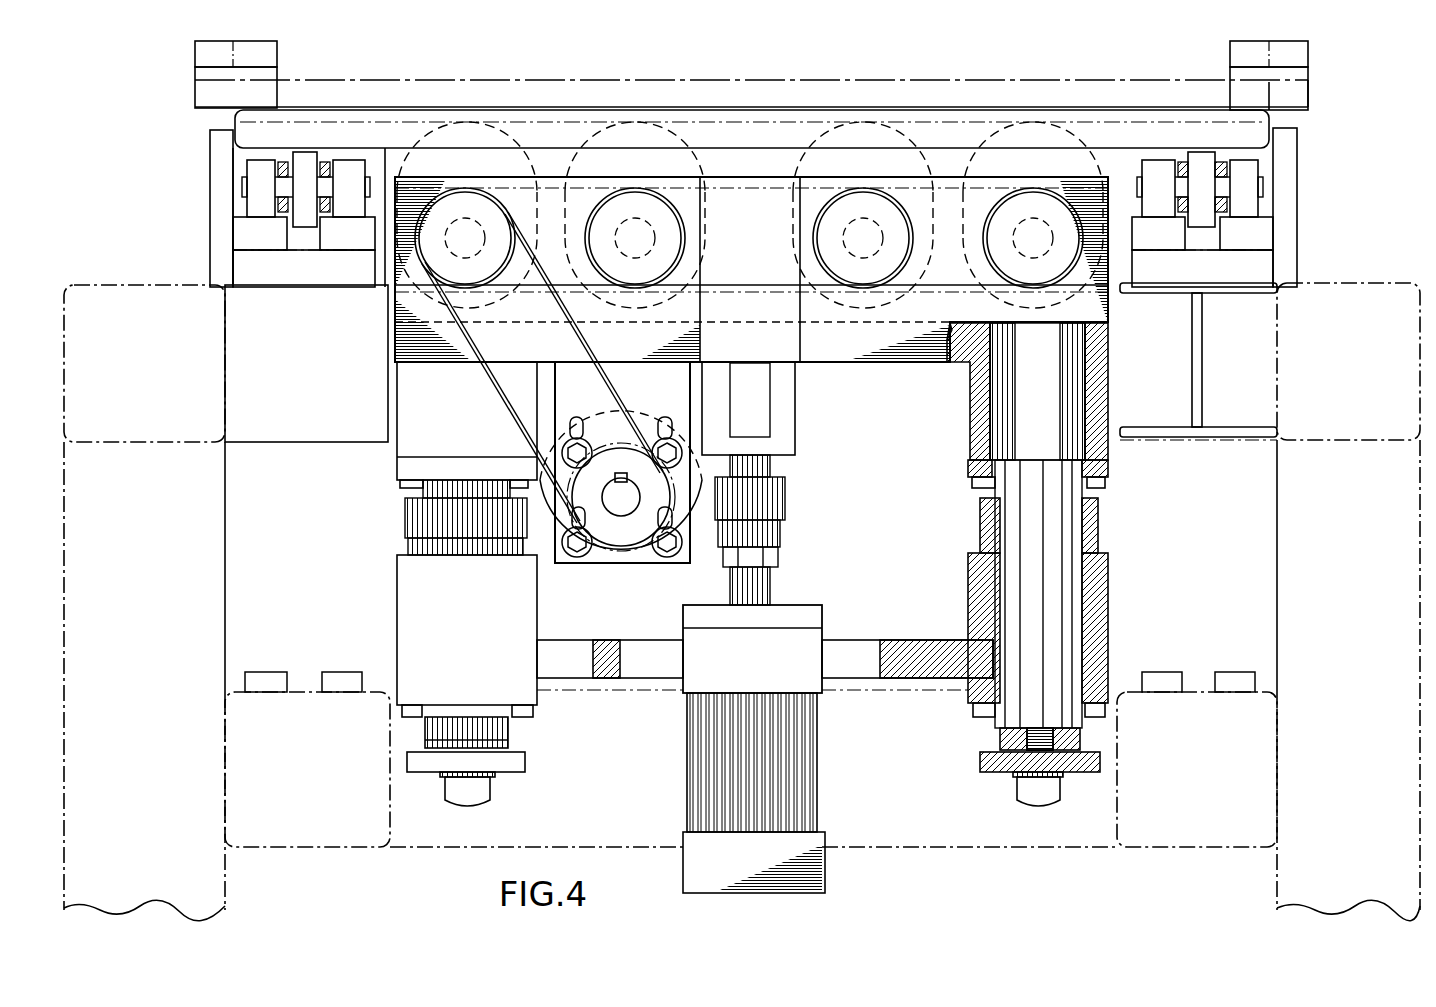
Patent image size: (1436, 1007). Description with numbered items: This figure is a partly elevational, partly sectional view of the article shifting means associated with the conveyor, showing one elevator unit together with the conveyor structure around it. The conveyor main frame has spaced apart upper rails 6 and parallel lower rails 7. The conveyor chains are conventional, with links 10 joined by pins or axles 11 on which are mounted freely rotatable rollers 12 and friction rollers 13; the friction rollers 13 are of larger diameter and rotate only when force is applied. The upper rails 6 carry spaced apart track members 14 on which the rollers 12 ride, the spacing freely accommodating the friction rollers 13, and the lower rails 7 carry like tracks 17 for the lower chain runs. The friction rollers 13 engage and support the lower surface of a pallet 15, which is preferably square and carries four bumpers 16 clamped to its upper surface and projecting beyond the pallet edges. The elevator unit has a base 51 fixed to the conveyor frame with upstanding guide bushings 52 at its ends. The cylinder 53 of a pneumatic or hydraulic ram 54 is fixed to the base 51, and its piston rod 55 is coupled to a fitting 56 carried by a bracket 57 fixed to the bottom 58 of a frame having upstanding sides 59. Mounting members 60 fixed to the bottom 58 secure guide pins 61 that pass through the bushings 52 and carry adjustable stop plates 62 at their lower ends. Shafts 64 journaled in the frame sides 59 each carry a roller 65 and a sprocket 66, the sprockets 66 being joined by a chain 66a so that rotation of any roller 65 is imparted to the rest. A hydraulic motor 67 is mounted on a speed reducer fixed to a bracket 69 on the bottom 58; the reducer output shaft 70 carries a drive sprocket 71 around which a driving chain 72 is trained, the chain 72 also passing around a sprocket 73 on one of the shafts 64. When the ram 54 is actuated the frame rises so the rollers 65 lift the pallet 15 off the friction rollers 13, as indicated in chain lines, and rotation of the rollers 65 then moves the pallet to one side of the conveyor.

The upper rails 6 is at (1203, 393).
The lower rails 7 is at (332, 849).
The links 10 is at (1221, 163).
The pins or axles 11 is at (1264, 187).
The rollers 12 is at (1157, 212).
The friction rollers 13 is at (1200, 228).
The track members 14 is at (1166, 247).
The pallet 15 is at (782, 117).
The bumpers 16 is at (195, 98).
The tracks 17 is at (340, 673).
The base 51 is at (916, 680).
The guide bushings 52 is at (536, 622).
The cylinder 53 is at (810, 640).
The ram 54 is at (830, 762).
The piston rod 55 is at (771, 592).
The fitting 56 is at (796, 456).
The bracket 57 is at (771, 414).
The frame bottom 58 is at (957, 365).
The upstanding sides 59 is at (946, 328).
The mounting members 60 is at (398, 449).
The guide pins 61 is at (470, 490).
The adjustable stop plates 62 is at (526, 768).
The shafts 64 is at (550, 238).
The rollers 65 is at (700, 205).
The sprockets 66 is at (813, 246).
The chain 66a is at (766, 290).
The hydraulic motor 67 is at (620, 579).
The bracket 69 is at (641, 394).
The output shaft 70 is at (612, 508).
The drive sprocket 71 is at (616, 445).
The driving chain 72 is at (496, 398).
The sprocket 73 is at (500, 282).